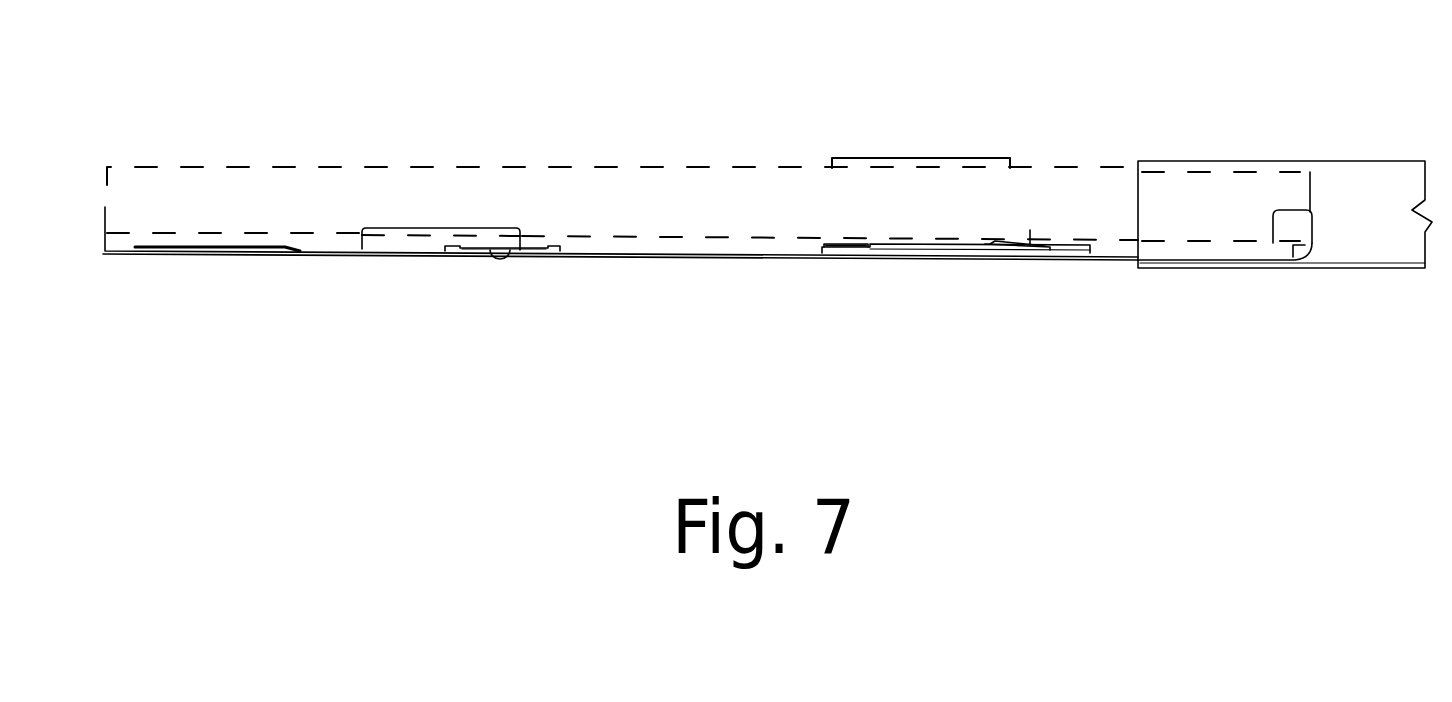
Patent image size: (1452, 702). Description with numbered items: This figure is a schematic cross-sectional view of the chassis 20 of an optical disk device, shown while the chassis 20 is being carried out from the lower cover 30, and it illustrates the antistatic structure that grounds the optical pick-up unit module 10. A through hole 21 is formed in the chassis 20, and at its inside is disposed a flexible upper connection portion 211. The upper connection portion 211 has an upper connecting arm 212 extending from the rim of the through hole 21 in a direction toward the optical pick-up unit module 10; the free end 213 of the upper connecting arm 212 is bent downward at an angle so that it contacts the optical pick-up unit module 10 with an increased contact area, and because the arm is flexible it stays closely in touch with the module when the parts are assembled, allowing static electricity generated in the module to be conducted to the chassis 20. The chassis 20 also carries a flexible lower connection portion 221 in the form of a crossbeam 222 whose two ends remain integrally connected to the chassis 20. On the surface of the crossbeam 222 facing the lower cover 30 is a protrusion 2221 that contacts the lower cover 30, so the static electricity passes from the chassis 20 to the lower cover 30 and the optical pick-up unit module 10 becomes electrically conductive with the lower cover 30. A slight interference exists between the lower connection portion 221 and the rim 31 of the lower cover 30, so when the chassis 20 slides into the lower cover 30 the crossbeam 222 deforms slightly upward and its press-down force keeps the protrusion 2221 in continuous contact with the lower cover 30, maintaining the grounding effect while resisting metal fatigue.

The optical pick-up unit module 10 is at (321, 163).
The chassis 20 is at (612, 250).
The through hole 21 is at (938, 257).
The upper connection portion 211 is at (1030, 243).
The upper connecting arm 212 is at (1010, 243).
The free end 213 is at (992, 257).
The lower connection portion 221 is at (488, 243).
The crossbeam 222 is at (522, 252).
The protrusion 2221 is at (497, 259).
The lower cover 30 is at (1380, 264).
The rim 31 is at (1140, 263).